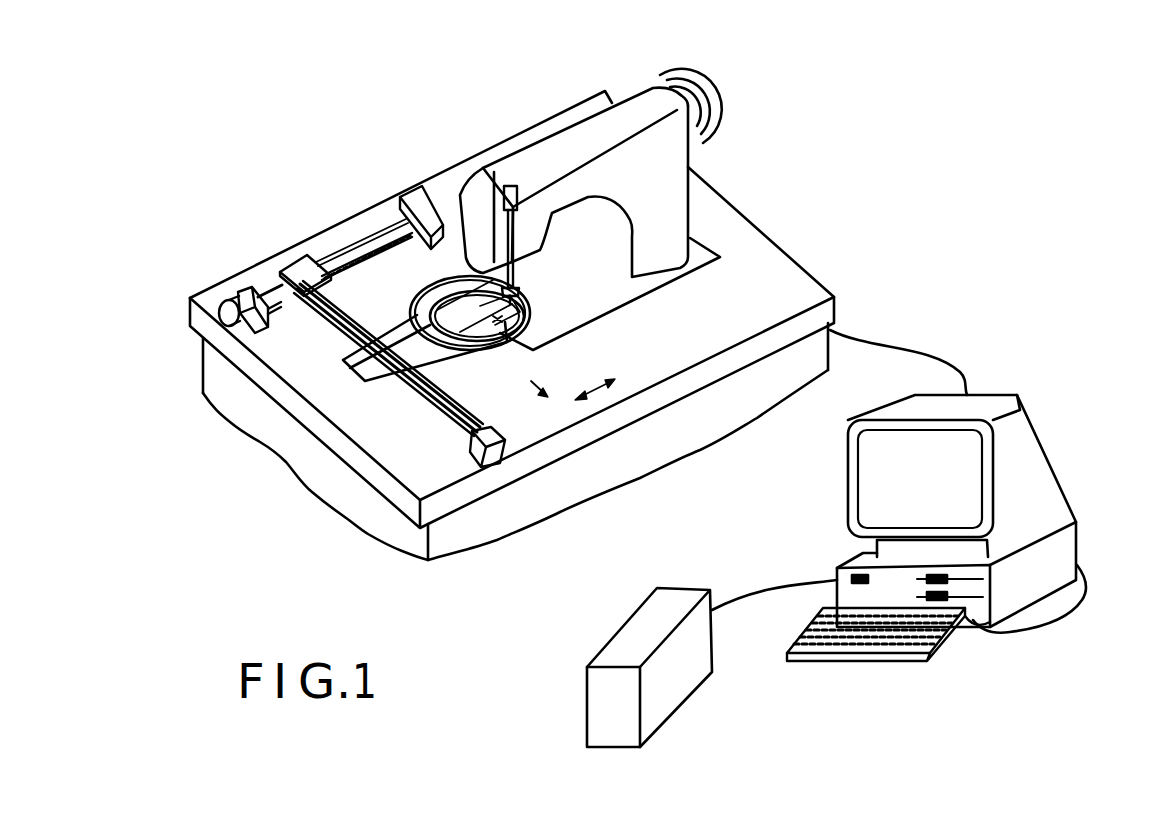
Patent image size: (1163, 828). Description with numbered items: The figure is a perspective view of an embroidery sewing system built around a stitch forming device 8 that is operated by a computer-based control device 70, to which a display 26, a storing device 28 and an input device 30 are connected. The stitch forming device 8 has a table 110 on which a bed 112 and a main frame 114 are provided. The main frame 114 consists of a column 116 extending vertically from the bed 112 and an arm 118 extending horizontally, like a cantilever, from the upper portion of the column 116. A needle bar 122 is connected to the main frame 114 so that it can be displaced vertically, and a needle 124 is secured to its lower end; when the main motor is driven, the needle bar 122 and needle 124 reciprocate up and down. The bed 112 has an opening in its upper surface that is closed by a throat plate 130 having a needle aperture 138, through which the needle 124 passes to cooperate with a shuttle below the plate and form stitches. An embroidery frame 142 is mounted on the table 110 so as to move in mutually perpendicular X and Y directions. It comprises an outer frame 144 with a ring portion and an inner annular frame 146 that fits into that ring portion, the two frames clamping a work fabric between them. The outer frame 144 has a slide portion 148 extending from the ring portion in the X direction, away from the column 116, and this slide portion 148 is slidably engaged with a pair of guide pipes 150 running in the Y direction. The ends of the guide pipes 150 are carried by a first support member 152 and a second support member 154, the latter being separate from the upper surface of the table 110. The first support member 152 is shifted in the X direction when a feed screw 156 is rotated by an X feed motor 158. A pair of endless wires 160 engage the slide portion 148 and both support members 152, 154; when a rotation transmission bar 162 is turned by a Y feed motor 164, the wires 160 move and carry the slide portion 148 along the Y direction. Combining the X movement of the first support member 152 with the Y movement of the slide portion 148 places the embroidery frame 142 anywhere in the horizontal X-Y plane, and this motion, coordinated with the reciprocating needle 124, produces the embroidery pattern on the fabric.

The stitch forming device 8 is at (850, 263).
The display 26 is at (850, 472).
The storing device 28 is at (625, 640).
The input device 30 is at (860, 662).
The control device 70 is at (1078, 560).
The table 110 is at (745, 240).
The bed 112 is at (667, 275).
The main frame 114 is at (624, 90).
The column 116 is at (670, 161).
The arm 118 is at (542, 155).
The needle bar 122 is at (517, 276).
The needle 124 is at (514, 306).
The throat plate 130 is at (478, 346).
The needle aperture 138 is at (550, 331).
The embroidery frame 142 is at (541, 322).
The outer frame 144 is at (574, 390).
The inner annular frame 146 is at (430, 292).
The slide portion 148 is at (367, 358).
The guide pipes 150 is at (592, 452).
The first support member 152 is at (296, 274).
The second support member 154 is at (492, 462).
The feed screw 156 is at (285, 295).
The X feed motor 158 is at (230, 303).
The endless wires 160 is at (400, 390).
The rotation transmission bar 162 is at (360, 240).
The Y feed motor 164 is at (425, 205).